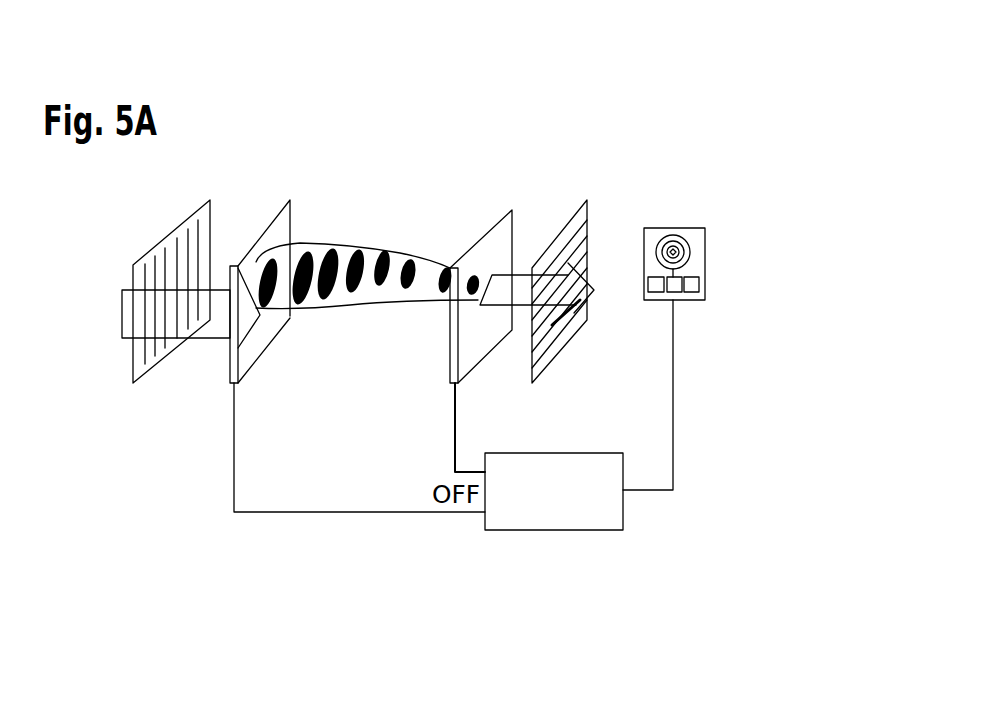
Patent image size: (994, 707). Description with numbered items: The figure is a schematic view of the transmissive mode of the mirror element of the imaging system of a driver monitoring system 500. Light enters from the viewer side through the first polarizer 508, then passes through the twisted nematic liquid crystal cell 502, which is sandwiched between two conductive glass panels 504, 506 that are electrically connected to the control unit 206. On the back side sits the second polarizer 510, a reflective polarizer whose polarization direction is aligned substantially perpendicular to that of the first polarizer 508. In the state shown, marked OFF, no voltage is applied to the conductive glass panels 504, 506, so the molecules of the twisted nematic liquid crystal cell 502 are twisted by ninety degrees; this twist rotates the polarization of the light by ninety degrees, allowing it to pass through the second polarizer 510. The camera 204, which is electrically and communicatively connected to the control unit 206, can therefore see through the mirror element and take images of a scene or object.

The driver monitoring system 500 is at (553, 140).
The twisted nematic liquid crystal cell 502 is at (367, 250).
The conductive glass panel 504 is at (230, 370).
The conductive glass panel 506 is at (450, 364).
The first polarizer 508 is at (130, 363).
The second polarizer 510 is at (552, 357).
The camera 204 is at (705, 250).
The control unit 206 is at (573, 533).